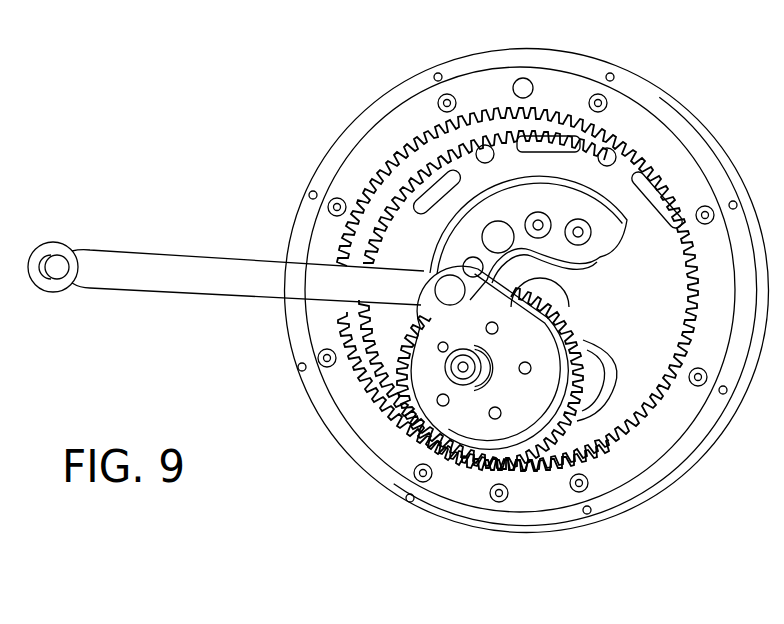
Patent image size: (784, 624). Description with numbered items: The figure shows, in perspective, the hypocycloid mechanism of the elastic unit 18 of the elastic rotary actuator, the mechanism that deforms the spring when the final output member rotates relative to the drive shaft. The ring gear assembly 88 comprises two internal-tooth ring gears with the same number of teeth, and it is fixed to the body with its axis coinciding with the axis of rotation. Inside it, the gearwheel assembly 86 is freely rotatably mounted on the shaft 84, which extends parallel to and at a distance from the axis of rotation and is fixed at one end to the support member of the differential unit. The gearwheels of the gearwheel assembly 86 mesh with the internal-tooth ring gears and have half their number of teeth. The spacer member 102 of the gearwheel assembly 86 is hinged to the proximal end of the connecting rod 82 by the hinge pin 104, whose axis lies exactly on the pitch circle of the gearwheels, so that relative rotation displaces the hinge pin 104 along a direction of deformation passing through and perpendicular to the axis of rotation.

The elastic unit 18 is at (696, 109).
The connecting rod 82 is at (148, 250).
The shaft 84 is at (461, 378).
The gearwheel assembly 86 is at (577, 436).
The ring gear assembly 88 is at (369, 429).
The spacer member 102 is at (511, 420).
The hinge pin 104 is at (418, 262).